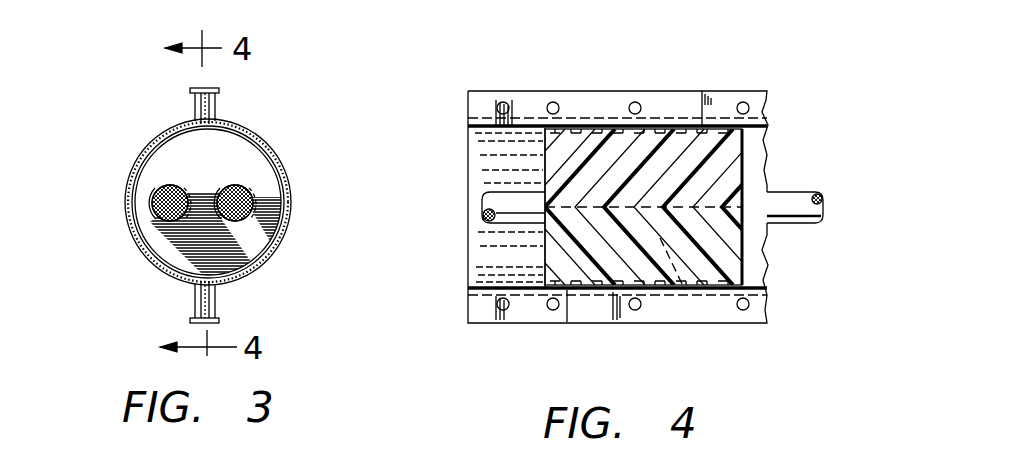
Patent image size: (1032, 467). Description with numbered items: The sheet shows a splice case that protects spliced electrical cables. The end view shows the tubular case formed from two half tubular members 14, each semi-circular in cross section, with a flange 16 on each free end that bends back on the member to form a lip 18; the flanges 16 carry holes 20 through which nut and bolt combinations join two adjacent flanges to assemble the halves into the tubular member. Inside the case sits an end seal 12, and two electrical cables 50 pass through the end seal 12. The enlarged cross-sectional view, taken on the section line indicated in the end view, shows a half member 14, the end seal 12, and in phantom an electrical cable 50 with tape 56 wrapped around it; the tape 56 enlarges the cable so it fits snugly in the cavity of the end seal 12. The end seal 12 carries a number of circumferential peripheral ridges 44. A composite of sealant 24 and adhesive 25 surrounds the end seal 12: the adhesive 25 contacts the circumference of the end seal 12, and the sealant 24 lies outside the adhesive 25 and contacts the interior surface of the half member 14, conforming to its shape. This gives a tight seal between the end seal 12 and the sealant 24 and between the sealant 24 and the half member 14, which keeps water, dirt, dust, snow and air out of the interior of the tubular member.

In FIG. 3, the end seal 12 is at (219, 178).
In FIG. 4, the half tubular member 14 is at (468, 289).
In FIG. 4, the flange 16 is at (482, 305).
In FIG. 4, the lip 18 is at (566, 324).
In FIG. 4, the holes 20 is at (503, 311).
In FIG. 3, the sealant 24 is at (138, 158).
In FIG. 4, the sealant 24 is at (468, 128).
In FIG. 3, the adhesive 25 is at (130, 228).
In FIG. 4, the adhesive 25 is at (470, 118).
In FIG. 4, the circumferential peripheral ridges 44 is at (673, 290).
In FIG. 4, the electrical cable 50 is at (518, 200).
In FIG. 4, the tape 56 is at (688, 295).